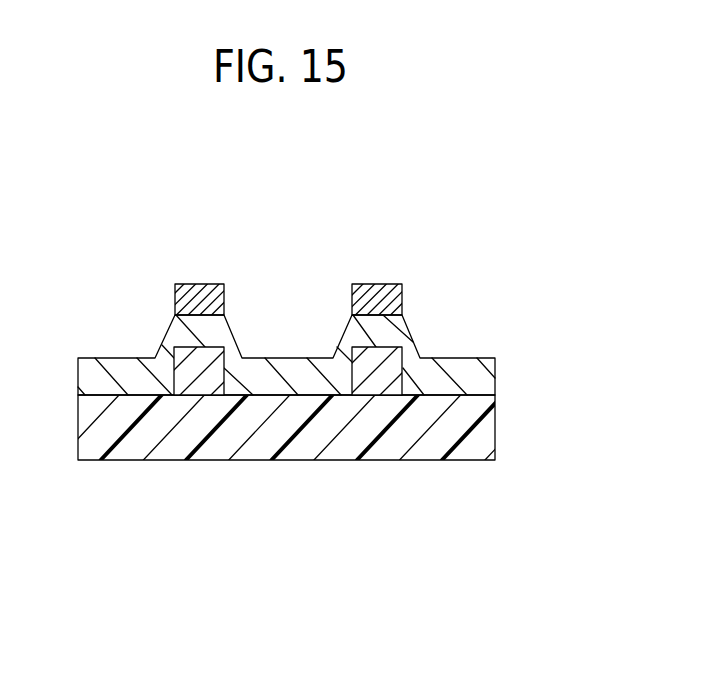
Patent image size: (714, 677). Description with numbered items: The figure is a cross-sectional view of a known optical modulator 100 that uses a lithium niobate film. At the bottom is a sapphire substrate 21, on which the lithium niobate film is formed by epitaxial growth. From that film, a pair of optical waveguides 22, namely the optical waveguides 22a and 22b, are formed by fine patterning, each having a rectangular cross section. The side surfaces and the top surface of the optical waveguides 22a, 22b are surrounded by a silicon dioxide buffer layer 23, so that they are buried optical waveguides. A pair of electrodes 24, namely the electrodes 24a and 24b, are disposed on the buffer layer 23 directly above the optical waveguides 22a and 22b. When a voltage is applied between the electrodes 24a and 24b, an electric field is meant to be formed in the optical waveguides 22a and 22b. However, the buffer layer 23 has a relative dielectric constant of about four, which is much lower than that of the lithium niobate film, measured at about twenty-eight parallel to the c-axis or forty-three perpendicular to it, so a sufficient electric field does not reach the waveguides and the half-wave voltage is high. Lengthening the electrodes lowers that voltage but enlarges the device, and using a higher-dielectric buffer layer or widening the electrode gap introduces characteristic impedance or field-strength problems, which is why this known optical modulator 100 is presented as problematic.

The optical modulator 100 is at (157, 223).
The sapphire substrate 21 is at (165, 450).
The optical waveguides 22 is at (370, 540).
The optical waveguide 22a is at (387, 388).
The optical waveguide 22b is at (208, 388).
The buffer layer 23 is at (113, 365).
The electrodes 24 is at (338, 220).
The electrode 24a is at (375, 285).
The electrode 24b is at (200, 285).